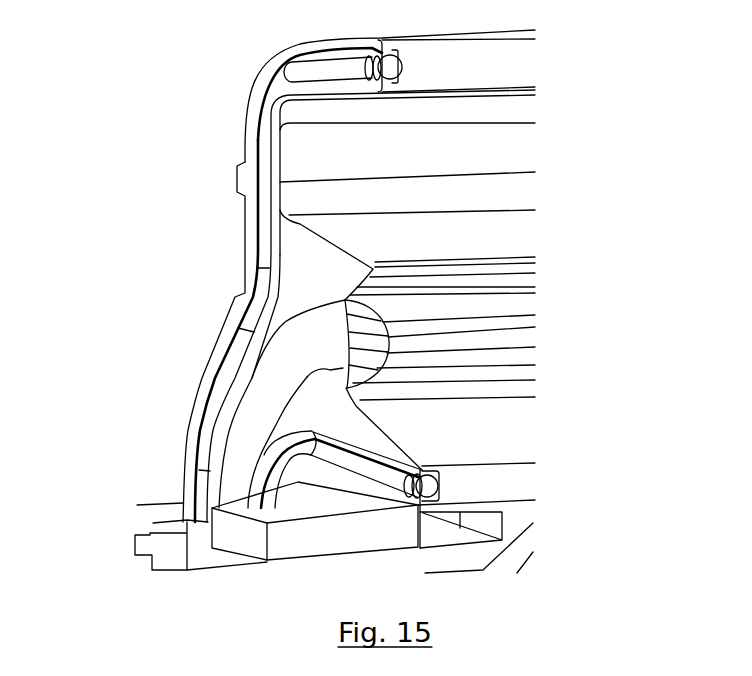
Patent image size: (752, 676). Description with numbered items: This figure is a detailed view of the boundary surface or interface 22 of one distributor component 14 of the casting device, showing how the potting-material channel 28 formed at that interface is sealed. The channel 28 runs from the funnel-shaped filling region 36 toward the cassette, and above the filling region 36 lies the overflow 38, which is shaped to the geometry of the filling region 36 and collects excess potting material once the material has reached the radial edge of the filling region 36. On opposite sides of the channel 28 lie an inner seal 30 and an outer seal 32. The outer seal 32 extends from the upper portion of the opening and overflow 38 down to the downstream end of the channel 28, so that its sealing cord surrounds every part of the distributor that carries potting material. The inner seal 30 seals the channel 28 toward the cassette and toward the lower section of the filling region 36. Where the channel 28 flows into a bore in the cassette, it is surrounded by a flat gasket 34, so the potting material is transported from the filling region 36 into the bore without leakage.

The distributor component 14 is at (598, 96).
The boundary surface or interface 22 is at (322, 247).
The channel 28 is at (251, 386).
The inner seal 30 is at (397, 462).
The outer seal 32 is at (257, 237).
The flat gasket 34 is at (154, 523).
The filling region 36 is at (424, 367).
The overflow 38 is at (507, 197).